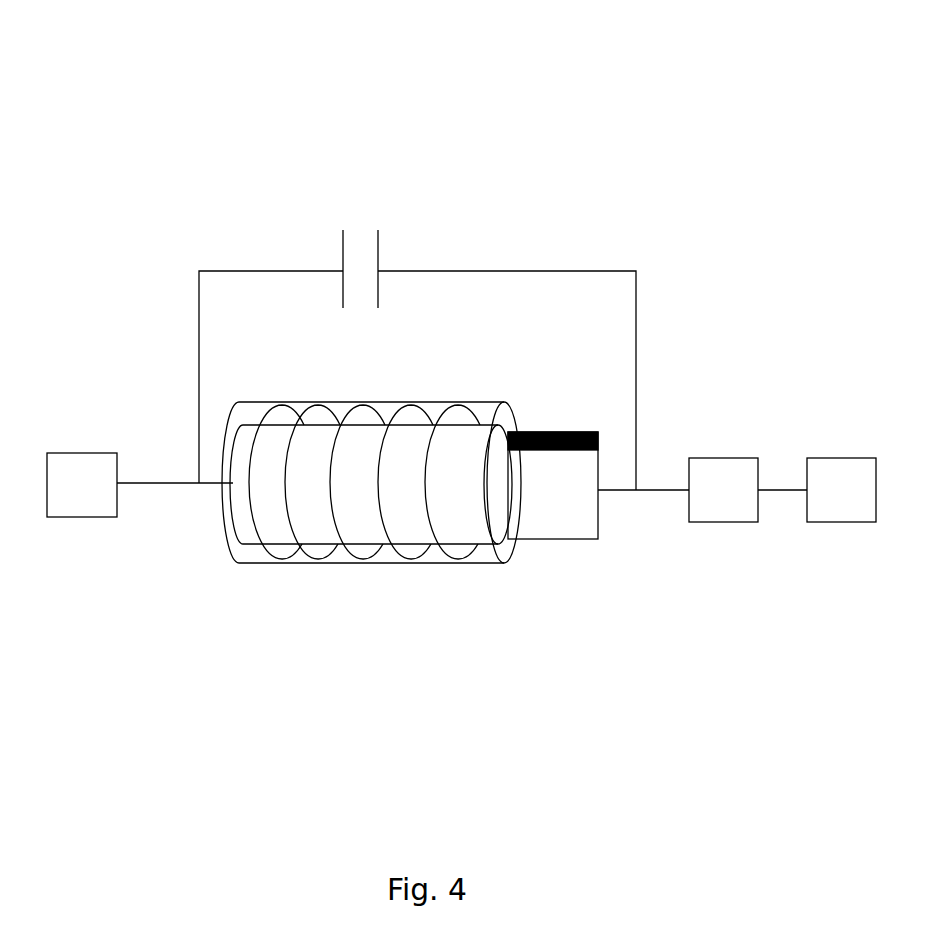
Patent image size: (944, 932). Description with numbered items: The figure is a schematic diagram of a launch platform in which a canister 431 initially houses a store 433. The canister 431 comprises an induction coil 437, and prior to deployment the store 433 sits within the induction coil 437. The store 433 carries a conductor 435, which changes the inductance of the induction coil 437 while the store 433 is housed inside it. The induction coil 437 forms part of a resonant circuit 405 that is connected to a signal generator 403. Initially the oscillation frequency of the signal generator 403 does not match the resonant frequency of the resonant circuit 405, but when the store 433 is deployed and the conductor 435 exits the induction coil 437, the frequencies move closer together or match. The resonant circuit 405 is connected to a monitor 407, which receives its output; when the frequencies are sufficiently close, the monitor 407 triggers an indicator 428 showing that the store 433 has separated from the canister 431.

The signal generator 403 is at (112, 501).
The resonant circuit 405 is at (348, 182).
The monitor 407 is at (753, 508).
The indicator 428 is at (872, 508).
The canister 431 is at (477, 402).
The store 433 is at (580, 510).
The conductor 435 is at (552, 433).
The induction coil 437 is at (262, 426).